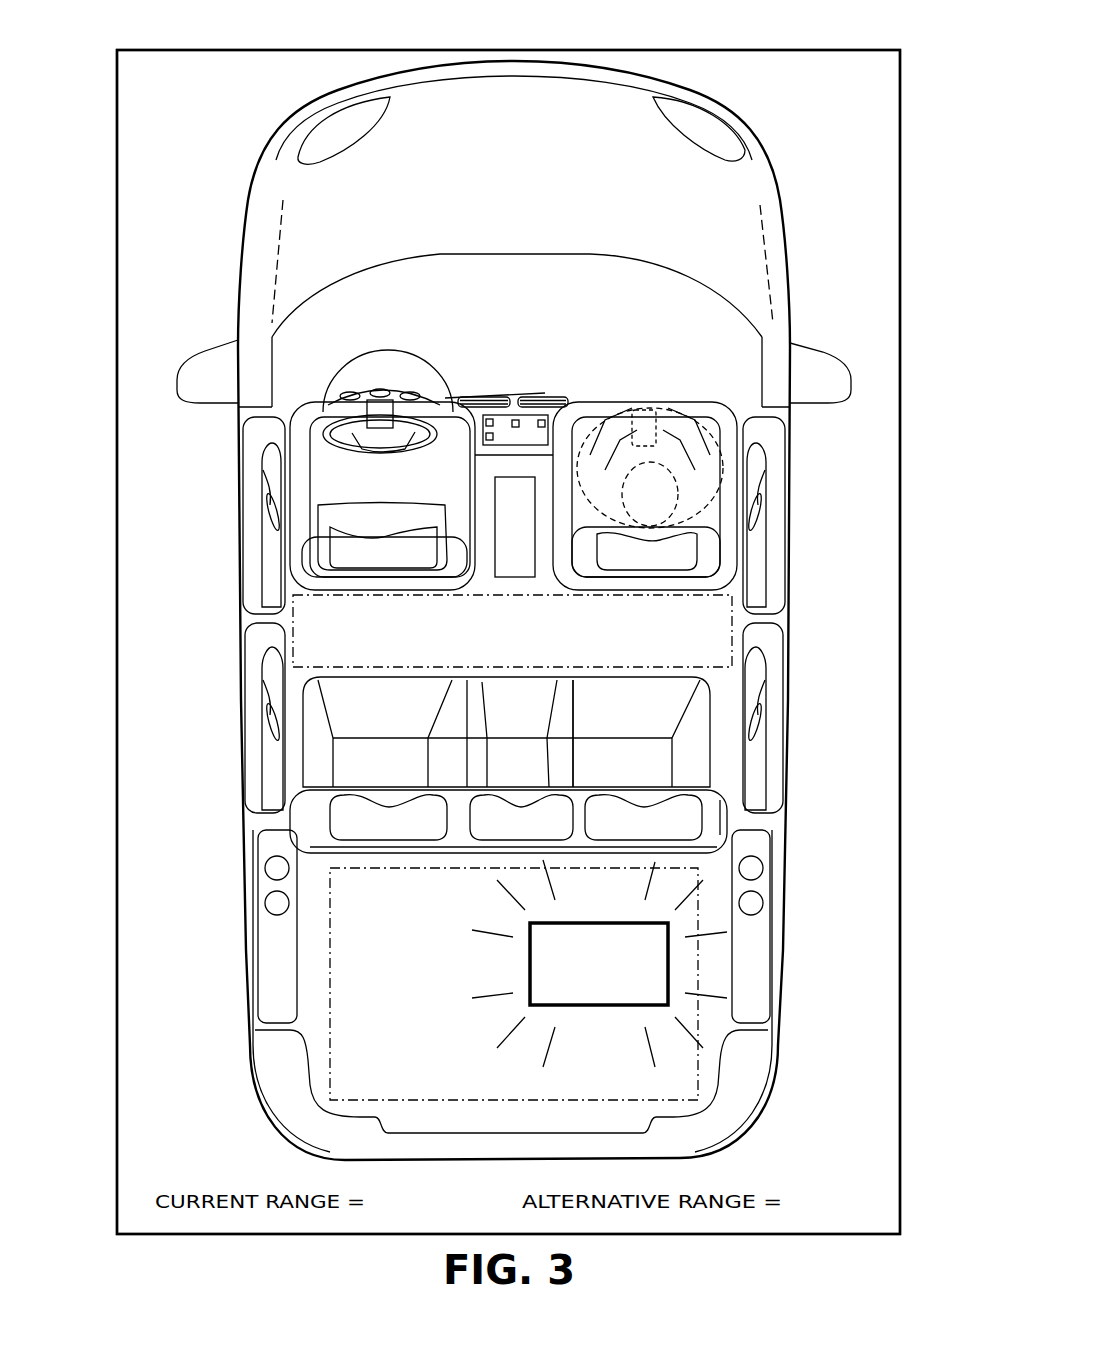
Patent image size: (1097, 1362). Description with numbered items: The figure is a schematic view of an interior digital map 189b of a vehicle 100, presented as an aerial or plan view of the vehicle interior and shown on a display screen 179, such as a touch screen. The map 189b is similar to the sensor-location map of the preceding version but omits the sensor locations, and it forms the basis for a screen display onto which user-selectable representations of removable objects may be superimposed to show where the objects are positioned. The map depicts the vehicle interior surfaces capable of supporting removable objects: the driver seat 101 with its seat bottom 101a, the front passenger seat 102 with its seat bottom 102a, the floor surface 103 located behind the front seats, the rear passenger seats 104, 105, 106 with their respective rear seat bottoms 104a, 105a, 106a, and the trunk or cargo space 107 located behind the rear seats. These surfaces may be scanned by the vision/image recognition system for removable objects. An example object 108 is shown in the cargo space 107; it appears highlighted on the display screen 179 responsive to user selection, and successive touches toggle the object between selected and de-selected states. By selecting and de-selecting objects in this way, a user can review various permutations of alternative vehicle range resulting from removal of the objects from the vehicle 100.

The interior digital map 189b is at (101, 108).
The display screen 179 is at (764, 49).
The vehicle 100 is at (794, 162).
The driver seat 101 is at (293, 430).
The seat bottom of driver seat 101a is at (343, 473).
The front passenger seat 102 is at (736, 505).
The seat bottom of front passenger seat 102a is at (733, 480).
The floor surface 103 is at (338, 635).
The rear passenger seat 104 is at (300, 739).
The rear seat bottom 104a is at (317, 760).
The rear passenger seat 105 is at (504, 702).
The rear seat bottom 105a is at (515, 712).
The rear passenger seat 106 is at (713, 702).
The rear seat bottom 106a is at (642, 707).
The trunk or cargo space 107 is at (355, 972).
The object 108 is at (647, 992).